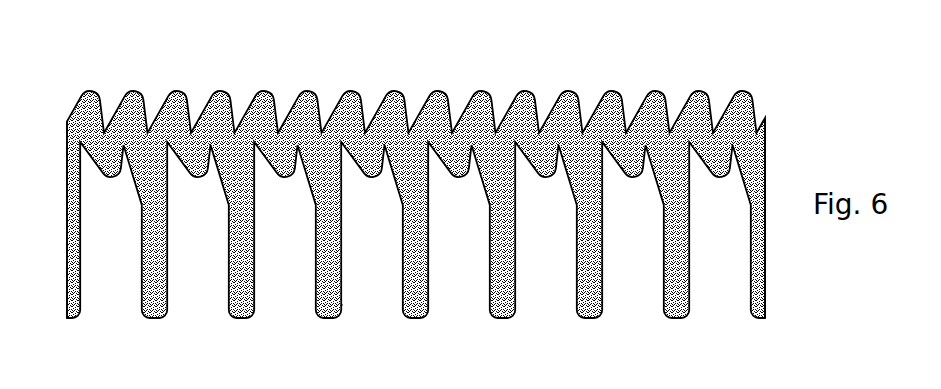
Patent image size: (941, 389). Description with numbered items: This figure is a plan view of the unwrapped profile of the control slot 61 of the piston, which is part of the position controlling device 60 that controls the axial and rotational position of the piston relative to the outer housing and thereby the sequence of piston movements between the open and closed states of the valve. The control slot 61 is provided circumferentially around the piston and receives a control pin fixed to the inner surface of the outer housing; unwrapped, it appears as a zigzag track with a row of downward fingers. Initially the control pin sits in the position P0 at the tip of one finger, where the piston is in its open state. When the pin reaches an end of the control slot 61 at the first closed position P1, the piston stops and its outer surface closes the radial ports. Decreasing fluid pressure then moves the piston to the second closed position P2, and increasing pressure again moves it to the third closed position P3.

The position controlling device 60 is at (570, 93).
The control slot 61 is at (757, 130).
The position P0 is at (342, 305).
The first closed position P1 is at (352, 92).
The second closed position P2 is at (373, 177).
The third closed position P3 is at (393, 98).